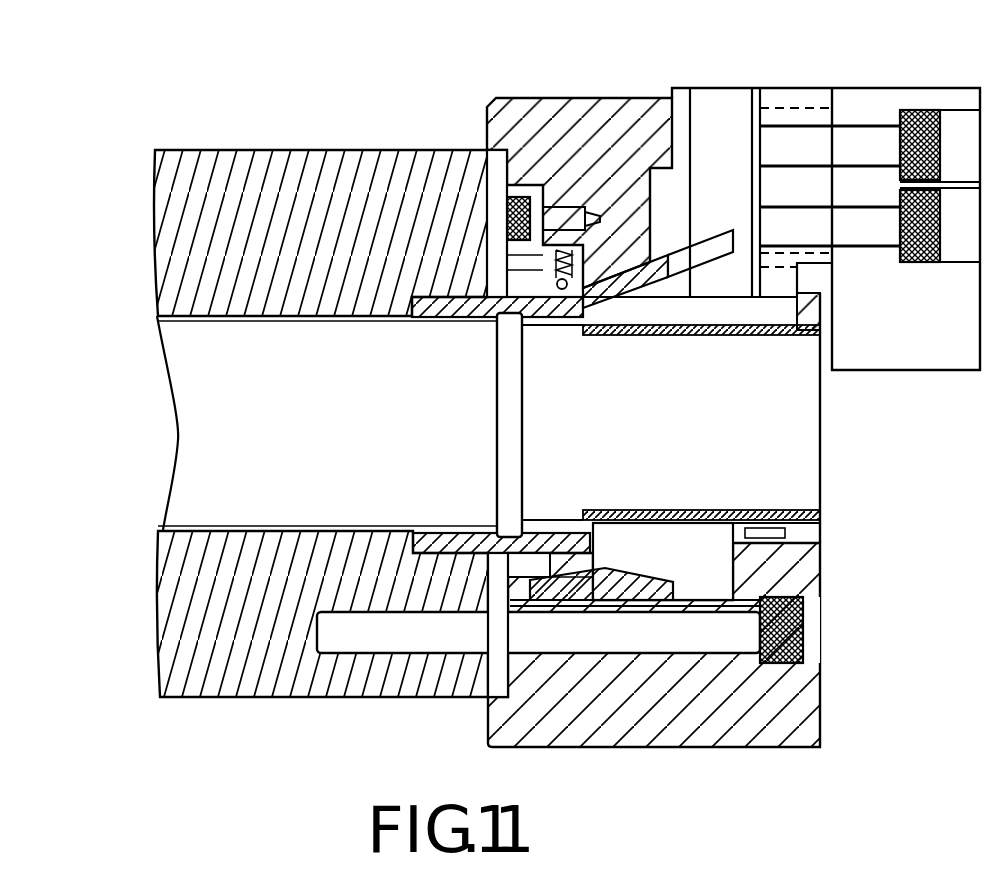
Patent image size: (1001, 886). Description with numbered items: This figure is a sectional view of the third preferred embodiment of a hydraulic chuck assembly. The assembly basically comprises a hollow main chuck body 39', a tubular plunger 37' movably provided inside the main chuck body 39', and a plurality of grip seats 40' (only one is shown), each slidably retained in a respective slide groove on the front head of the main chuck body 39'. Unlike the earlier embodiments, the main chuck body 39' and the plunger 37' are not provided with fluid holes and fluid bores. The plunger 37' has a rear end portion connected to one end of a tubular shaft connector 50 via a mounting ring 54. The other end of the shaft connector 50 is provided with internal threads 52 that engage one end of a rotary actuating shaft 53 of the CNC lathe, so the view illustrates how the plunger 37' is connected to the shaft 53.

The rotary actuating shaft 53 is at (273, 340).
The internal threads 52 is at (440, 310).
The tubular shaft connector 50 is at (500, 308).
The mounting ring 54 is at (505, 290).
The tubular plunger 37' is at (631, 315).
The grip seat 40' is at (826, 197).
The main chuck body 39' is at (574, 452).